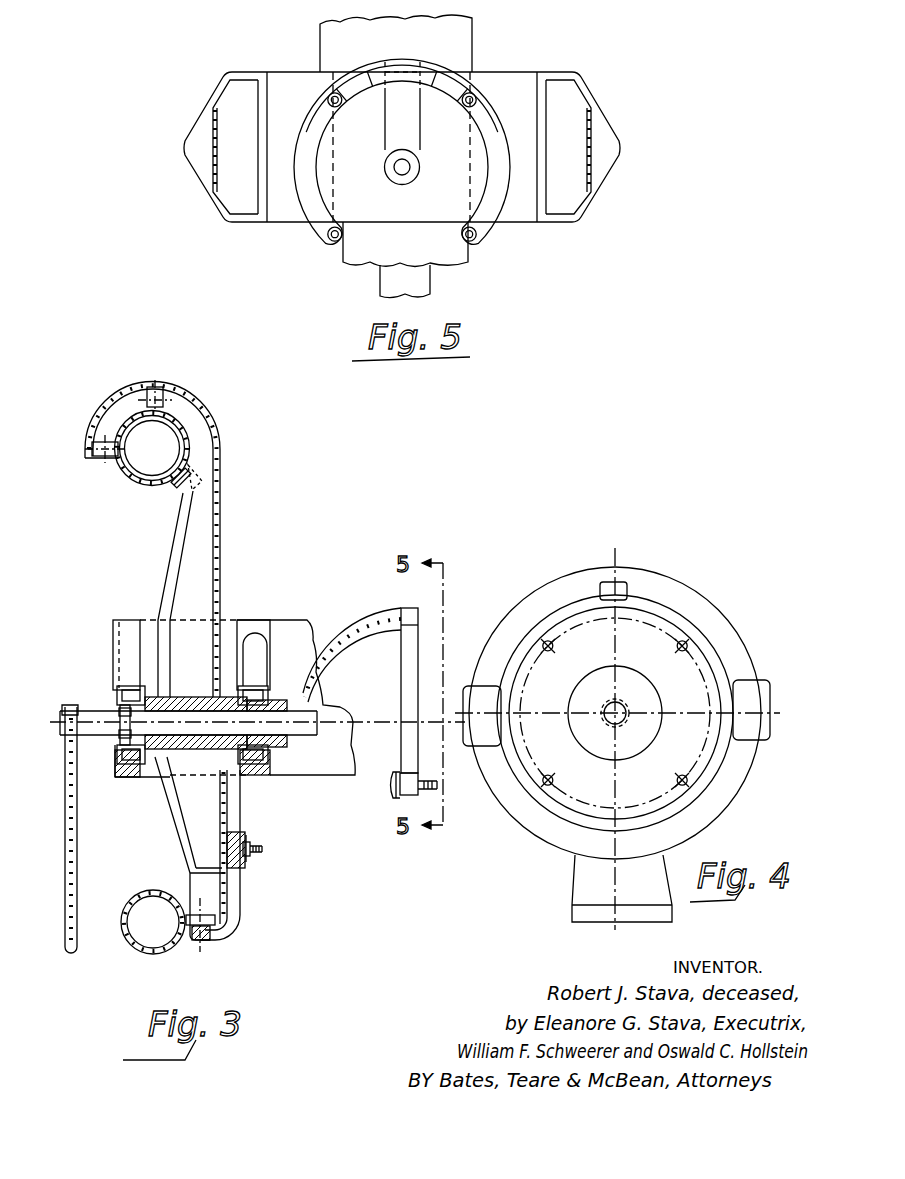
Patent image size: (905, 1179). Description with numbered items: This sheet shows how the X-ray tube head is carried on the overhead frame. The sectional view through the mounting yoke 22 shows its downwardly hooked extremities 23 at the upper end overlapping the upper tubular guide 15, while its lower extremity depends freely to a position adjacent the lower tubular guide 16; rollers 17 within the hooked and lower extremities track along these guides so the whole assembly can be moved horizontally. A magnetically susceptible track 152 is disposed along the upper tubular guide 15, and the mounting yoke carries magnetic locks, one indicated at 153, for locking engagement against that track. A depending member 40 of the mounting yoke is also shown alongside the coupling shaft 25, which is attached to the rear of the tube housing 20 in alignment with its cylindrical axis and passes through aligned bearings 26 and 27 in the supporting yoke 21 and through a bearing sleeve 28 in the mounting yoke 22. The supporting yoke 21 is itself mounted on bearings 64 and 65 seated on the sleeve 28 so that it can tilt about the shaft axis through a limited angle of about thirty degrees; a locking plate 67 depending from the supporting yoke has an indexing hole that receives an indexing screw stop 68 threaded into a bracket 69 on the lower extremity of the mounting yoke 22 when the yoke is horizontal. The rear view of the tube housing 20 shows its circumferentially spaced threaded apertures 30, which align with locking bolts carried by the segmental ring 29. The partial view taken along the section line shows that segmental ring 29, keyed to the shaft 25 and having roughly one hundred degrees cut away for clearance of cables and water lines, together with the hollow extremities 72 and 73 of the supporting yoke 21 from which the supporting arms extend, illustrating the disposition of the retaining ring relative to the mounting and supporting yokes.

In FIG. 3, the upper tubular guide 15 is at (142, 481).
In FIG. 3, the lower tubular guide 16 is at (140, 953).
In FIG. 3, the rollers 17 is at (153, 380).
In FIG. 4, the tube housing 20 is at (672, 583).
In FIG. 5, the supporting yoke 21 is at (510, 80).
In FIG. 3, the supporting yoke 21 is at (328, 768).
In FIG. 5, the mounting yoke 22 is at (460, 43).
In FIG. 3, the mounting yoke 22 is at (213, 522).
In FIG. 3, the downwardly hooked extremities 23 is at (84, 447).
In FIG. 5, the coupling shaft 25 is at (401, 170).
In FIG. 3, the coupling shaft 25 is at (102, 714).
In FIG. 3, the bearing 26 is at (280, 738).
In FIG. 3, the bearing 27 is at (115, 745).
In FIG. 3, the bearing sleeve 28 is at (157, 765).
In FIG. 5, the segmental ring 29 is at (492, 232).
In FIG. 3, the segmental ring 29 is at (403, 668).
In FIG. 3, the threaded apertures 30 is at (395, 795).
In FIG. 4, the threaded apertures 30 is at (554, 648).
In FIG. 5, the side plate 40 is at (428, 280).
In FIG. 3, the side plate 40 is at (78, 862).
In FIG. 3, the bearing 64 is at (114, 691).
In FIG. 3, the bearing 65 is at (270, 689).
In FIG. 3, the locking plate 67 is at (243, 810).
In FIG. 3, the indexing screw stop 68 is at (264, 853).
In FIG. 3, the bracket 69 is at (257, 859).
In FIG. 5, the hollow extremity 72 is at (222, 97).
In FIG. 5, the hollow extremity 73 is at (577, 96).
In FIG. 3, the magnetically susceptible track 152 is at (168, 482).
In FIG. 3, the catch 153 is at (181, 498).